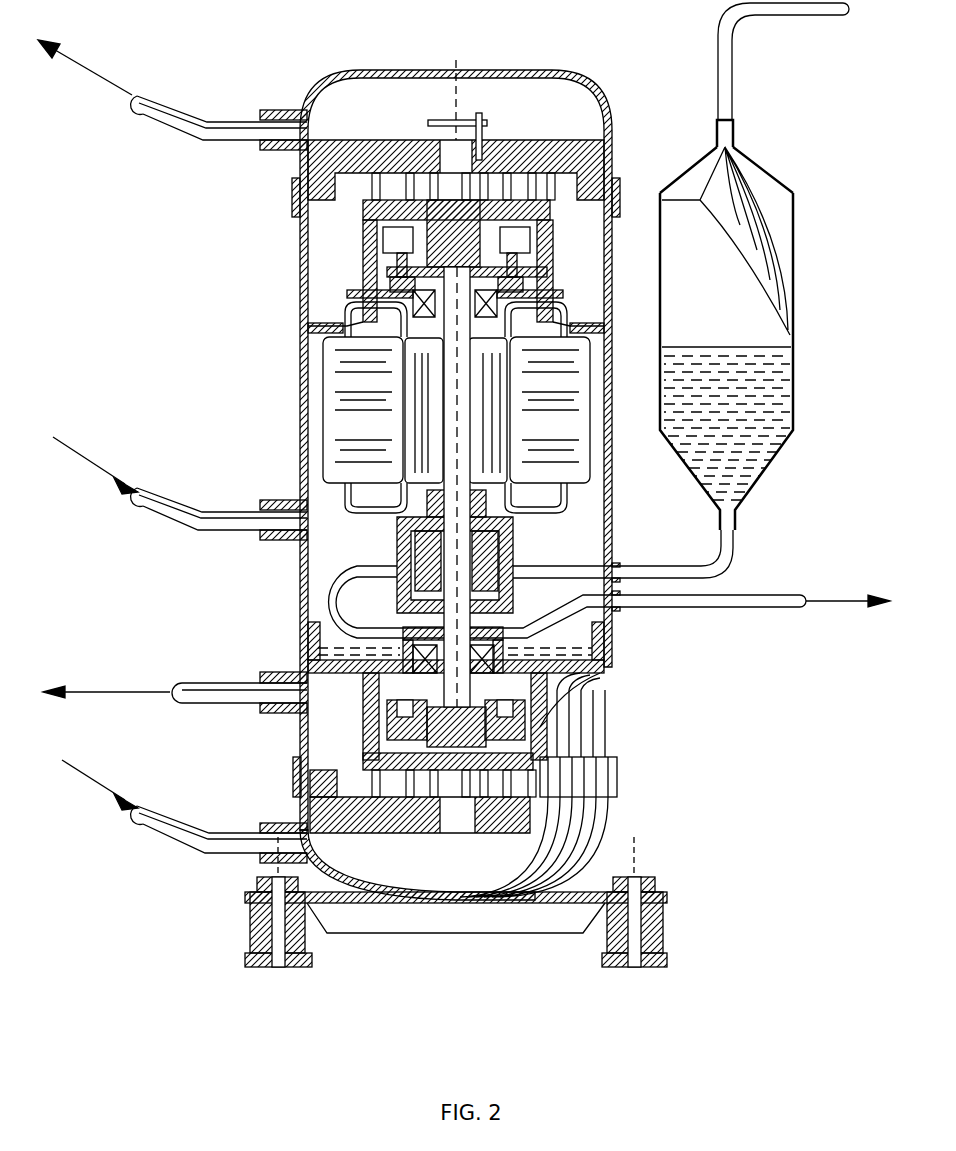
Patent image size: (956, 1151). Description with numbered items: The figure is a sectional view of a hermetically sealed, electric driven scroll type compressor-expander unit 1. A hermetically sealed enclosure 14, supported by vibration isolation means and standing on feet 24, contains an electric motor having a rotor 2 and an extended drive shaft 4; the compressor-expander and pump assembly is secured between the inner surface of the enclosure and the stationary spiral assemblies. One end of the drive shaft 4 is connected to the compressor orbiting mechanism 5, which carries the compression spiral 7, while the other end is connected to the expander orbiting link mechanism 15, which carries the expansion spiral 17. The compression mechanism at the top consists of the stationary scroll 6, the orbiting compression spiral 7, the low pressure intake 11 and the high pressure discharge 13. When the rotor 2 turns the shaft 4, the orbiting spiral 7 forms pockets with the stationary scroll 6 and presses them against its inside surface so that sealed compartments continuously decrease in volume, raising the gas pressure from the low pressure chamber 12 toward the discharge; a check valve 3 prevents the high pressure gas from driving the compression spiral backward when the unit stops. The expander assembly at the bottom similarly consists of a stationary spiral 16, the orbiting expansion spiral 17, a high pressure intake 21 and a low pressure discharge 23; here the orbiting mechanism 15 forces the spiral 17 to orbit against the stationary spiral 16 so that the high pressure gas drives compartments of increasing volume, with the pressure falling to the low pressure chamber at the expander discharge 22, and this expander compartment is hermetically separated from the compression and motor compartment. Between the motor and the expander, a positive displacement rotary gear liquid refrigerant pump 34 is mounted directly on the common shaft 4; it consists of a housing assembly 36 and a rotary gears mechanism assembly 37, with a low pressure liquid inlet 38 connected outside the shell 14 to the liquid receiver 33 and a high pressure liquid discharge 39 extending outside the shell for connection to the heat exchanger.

The scroll type compressor-expander unit 1 is at (172, 908).
The rotor 2 is at (415, 400).
The check valve 3 is at (448, 118).
The drive shaft 4 is at (455, 477).
The compressor orbiting mechanism 5 is at (400, 292).
The stationary scroll 6 is at (307, 178).
The compression spiral 7 is at (370, 233).
The low pressure intake 11 is at (190, 500).
The low pressure chamber 12 is at (345, 205).
The high pressure discharge 13 is at (183, 110).
The hermetically sealed enclosure 14 is at (617, 830).
The expander orbiting link mechanism 15 is at (540, 727).
The stationary spiral 16 is at (347, 827).
The expansion spiral 17 is at (303, 760).
The high pressure intake 21 is at (190, 825).
The expander discharge 22 is at (300, 792).
The low pressure discharge 23 is at (190, 680).
The base foot 24 is at (660, 917).
The liquid receiver 33 is at (793, 340).
The liquid refrigerant pump 34 is at (520, 555).
The housing assembly 36 is at (500, 523).
The rotary gears mechanism assembly 37 is at (518, 606).
The low pressure liquid inlet 38 is at (628, 567).
The high pressure liquid discharge 39 is at (621, 610).